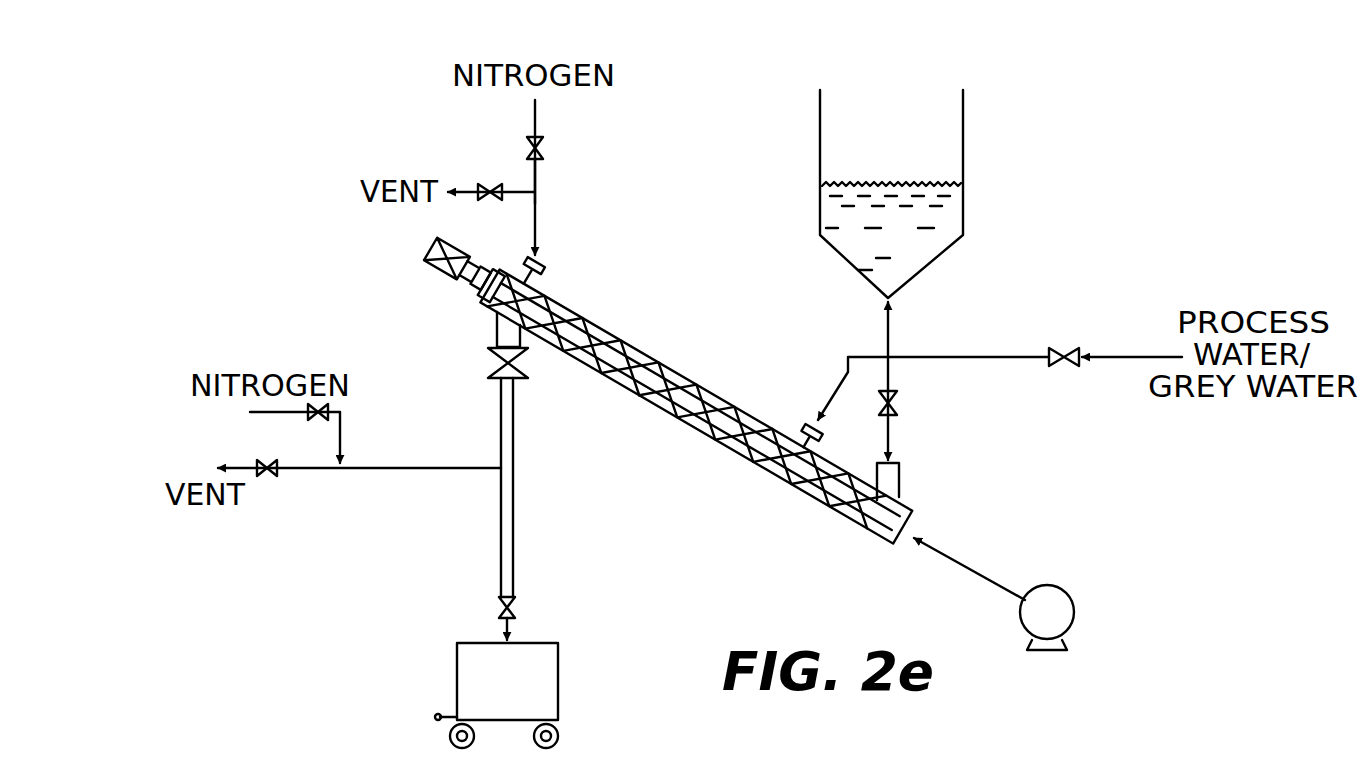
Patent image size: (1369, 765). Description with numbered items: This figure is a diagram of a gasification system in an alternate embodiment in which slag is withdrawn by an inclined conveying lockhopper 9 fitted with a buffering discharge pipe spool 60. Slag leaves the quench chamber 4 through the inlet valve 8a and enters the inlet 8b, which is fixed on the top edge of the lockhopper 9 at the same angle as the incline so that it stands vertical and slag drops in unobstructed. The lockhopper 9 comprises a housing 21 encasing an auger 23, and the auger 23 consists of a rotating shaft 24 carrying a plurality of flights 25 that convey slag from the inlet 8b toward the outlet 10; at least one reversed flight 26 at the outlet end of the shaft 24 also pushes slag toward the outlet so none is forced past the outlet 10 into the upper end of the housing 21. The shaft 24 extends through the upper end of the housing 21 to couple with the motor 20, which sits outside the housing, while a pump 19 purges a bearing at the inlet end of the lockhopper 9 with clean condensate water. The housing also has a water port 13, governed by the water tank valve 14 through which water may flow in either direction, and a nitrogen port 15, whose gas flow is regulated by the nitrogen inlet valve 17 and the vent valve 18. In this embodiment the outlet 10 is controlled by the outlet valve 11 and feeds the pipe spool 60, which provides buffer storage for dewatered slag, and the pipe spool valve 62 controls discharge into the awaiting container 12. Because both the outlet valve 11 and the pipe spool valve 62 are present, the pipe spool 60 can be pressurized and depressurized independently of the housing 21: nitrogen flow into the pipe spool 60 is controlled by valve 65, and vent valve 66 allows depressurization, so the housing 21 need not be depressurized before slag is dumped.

The quench chamber 4 is at (896, 262).
The inlet valve 8a is at (897, 402).
The inlet 8b is at (905, 484).
The conveying lockhopper 9 is at (676, 353).
The outlet 10 is at (495, 330).
The outlet valve 11 is at (514, 364).
The container 12 is at (518, 697).
The water port 13 is at (812, 426).
The water tank valve 14 is at (1064, 366).
The nitrogen port 15 is at (548, 264).
The nitrogen inlet valve 17 is at (538, 148).
The vent valve 18 is at (490, 184).
The pump 19 is at (1075, 625).
The motor 20 is at (432, 250).
The housing 21 is at (622, 338).
The auger 23 is at (812, 492).
The shaft 24 is at (740, 450).
The flights 25 is at (700, 440).
The reversed flight 26 is at (478, 302).
The pipe spool 60 is at (365, 497).
The pipe spool valve 62 is at (517, 606).
The valve 65 is at (318, 418).
The vent valve 66 is at (268, 456).